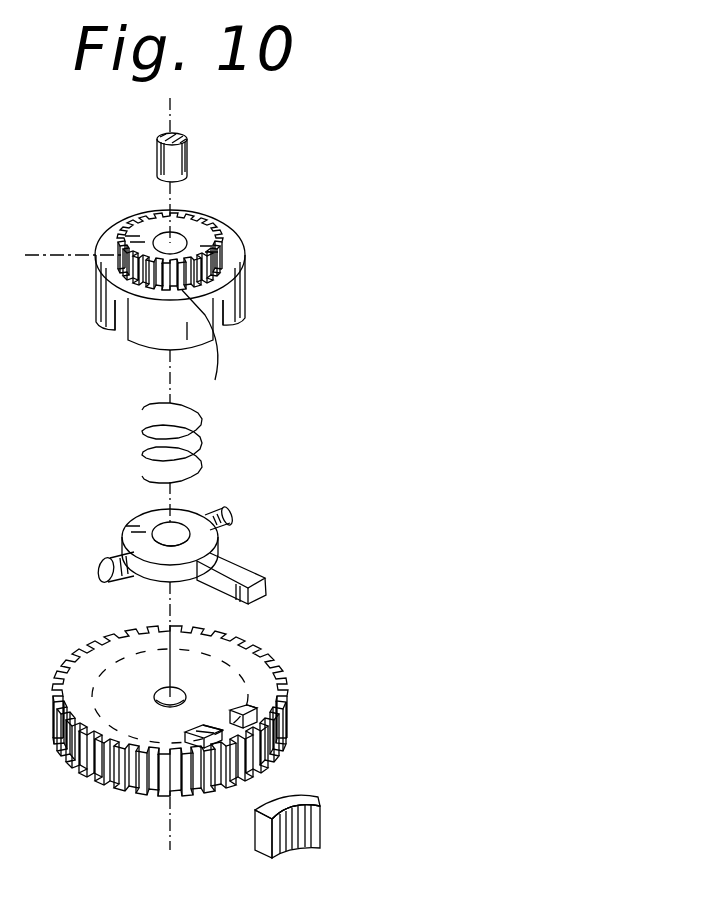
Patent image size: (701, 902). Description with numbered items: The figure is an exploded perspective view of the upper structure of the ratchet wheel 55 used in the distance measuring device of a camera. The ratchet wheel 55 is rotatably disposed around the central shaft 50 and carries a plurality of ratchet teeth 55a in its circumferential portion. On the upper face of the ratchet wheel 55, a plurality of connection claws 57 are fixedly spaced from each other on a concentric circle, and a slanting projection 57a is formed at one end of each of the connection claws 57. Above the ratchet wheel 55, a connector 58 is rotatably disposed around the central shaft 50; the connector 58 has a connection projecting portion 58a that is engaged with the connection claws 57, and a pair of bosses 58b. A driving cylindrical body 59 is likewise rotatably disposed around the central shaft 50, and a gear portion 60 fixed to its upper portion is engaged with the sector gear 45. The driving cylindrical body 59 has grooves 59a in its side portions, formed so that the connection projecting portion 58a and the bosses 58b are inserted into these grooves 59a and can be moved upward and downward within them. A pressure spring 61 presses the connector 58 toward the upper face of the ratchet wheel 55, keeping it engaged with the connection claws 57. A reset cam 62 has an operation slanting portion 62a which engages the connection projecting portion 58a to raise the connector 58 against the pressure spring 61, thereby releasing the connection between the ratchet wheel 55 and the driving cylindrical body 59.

The sector gear 45 is at (62, 252).
The central shaft 50 is at (188, 166).
The ratchet wheel 55 is at (225, 711).
The ratchet teeth 55a is at (255, 772).
The connection claws 57 is at (260, 727).
The slanting projection 57a is at (250, 703).
The connector 58 is at (230, 541).
The connection projecting portion 58a is at (262, 574).
The bosses 58b is at (226, 510).
The driving cylindrical body 59 is at (258, 293).
The grooves 59a is at (122, 332).
The gear portion 60 is at (222, 258).
The pressure spring 61 is at (200, 412).
The reset cam 62 is at (330, 818).
The operation slanting portion 62a is at (287, 822).